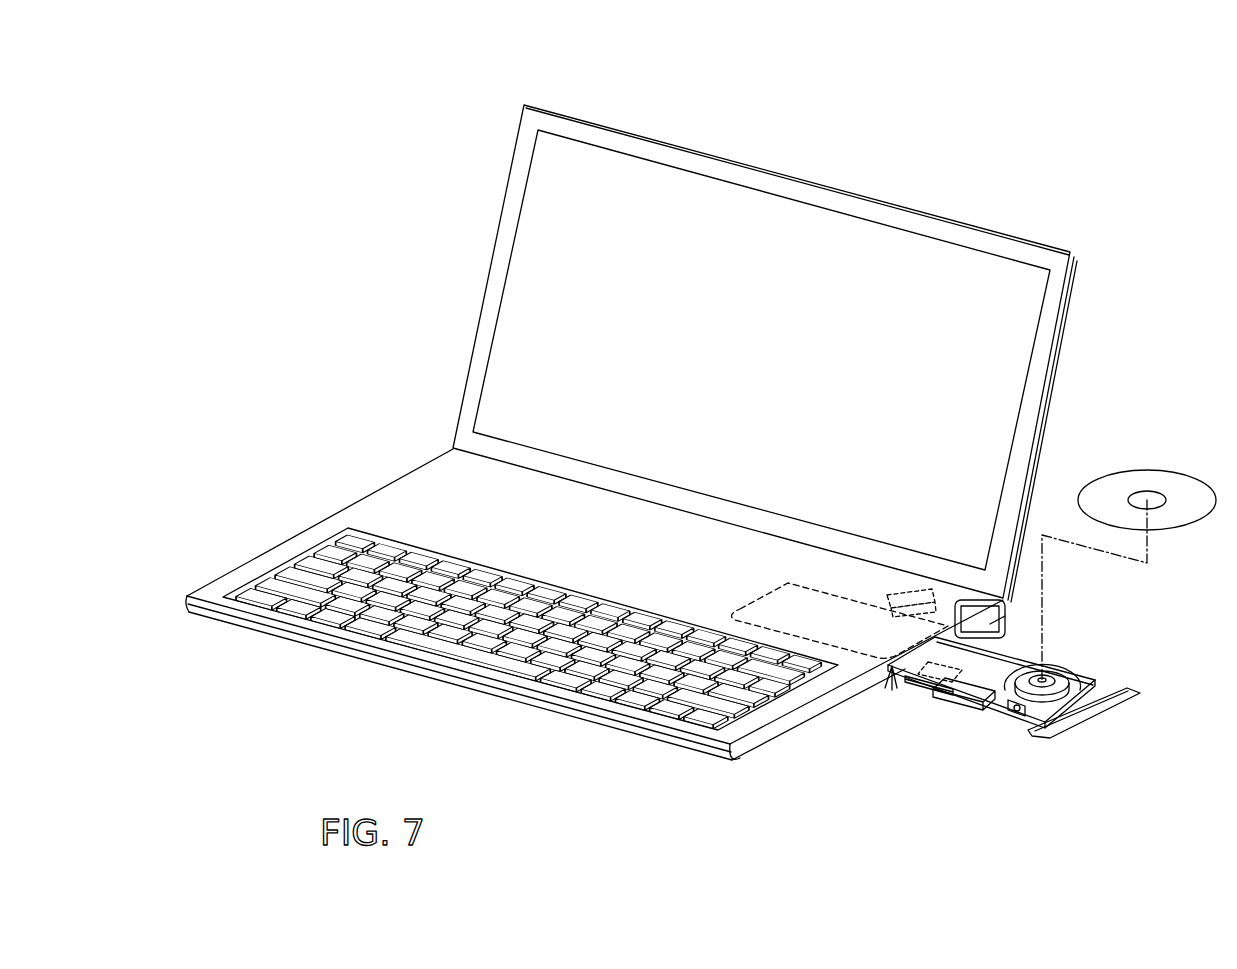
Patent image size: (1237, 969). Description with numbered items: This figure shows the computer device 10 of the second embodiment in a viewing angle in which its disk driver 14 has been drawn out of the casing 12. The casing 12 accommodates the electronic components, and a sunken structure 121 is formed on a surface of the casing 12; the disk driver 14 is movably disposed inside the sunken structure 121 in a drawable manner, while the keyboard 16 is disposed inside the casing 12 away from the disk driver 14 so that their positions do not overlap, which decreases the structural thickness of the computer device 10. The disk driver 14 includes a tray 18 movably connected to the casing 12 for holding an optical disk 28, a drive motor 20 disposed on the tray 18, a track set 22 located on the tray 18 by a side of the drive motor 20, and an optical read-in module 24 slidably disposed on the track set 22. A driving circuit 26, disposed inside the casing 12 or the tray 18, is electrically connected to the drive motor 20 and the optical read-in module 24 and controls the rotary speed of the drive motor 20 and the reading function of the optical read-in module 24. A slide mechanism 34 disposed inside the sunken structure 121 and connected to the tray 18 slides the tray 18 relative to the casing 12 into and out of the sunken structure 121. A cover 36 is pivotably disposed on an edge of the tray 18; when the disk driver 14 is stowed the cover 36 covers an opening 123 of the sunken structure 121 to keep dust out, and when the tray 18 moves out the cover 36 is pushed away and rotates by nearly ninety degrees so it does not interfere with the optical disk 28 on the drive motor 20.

The computer device 10 is at (1003, 158).
The casing 12 is at (395, 505).
The sunken structure 121 is at (775, 612).
The opening 123 is at (890, 688).
The disk driver 14 is at (996, 738).
The keyboard 16 is at (565, 668).
The tray 18 is at (1032, 710).
The drive motor 20 is at (1012, 718).
The track set 22 is at (975, 712).
The optical read-in module 24 is at (950, 705).
The driving circuit 26 is at (923, 595).
The optical disk 28 is at (1150, 483).
The slide mechanism 34 is at (918, 700).
The cover 36 is at (1084, 746).